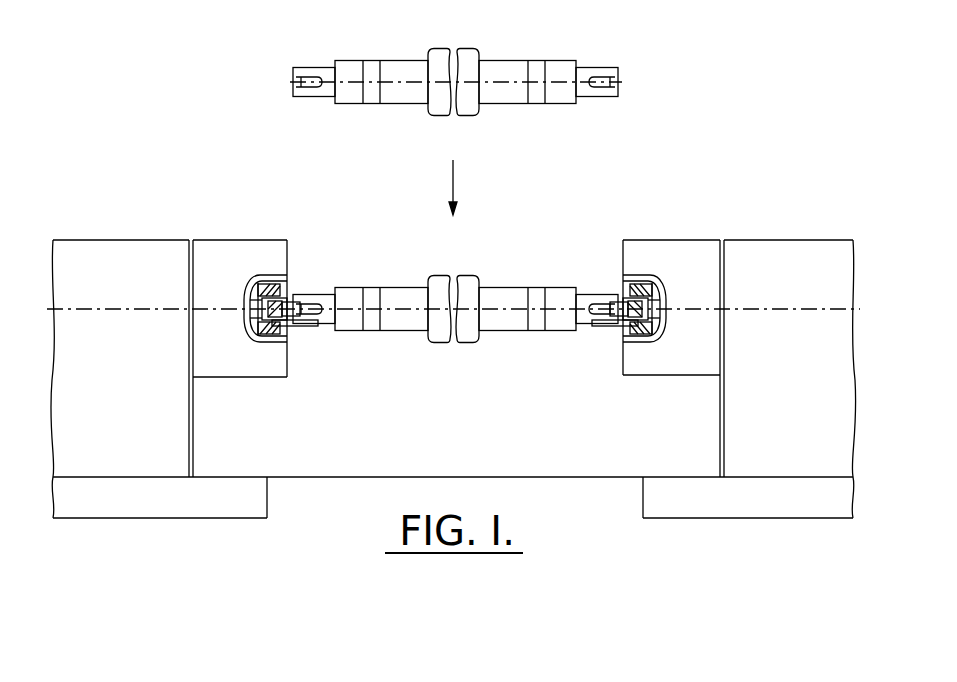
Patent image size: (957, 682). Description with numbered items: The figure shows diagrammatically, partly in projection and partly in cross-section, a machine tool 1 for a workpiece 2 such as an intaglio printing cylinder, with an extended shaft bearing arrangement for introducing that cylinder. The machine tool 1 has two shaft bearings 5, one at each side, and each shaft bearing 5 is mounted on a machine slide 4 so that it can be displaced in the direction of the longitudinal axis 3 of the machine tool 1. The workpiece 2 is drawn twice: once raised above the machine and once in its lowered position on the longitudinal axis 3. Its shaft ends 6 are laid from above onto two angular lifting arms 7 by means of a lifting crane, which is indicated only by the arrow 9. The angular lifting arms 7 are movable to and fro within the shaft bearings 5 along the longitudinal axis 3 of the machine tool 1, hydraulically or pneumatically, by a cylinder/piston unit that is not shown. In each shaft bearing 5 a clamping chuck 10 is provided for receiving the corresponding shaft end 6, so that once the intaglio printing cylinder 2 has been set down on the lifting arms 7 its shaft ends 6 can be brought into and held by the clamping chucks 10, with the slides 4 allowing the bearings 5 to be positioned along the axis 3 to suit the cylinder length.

The machine tool 1 is at (205, 182).
The workpiece 2 is at (440, 55).
The longitudinal axis 3 is at (787, 310).
The machine slide 4 is at (161, 507).
The shaft bearing 5 is at (117, 250).
The shaft end 6 is at (313, 72).
The angular lifting arm 7 is at (297, 330).
The arrow 9 is at (454, 172).
The clamping chuck 10 is at (252, 250).